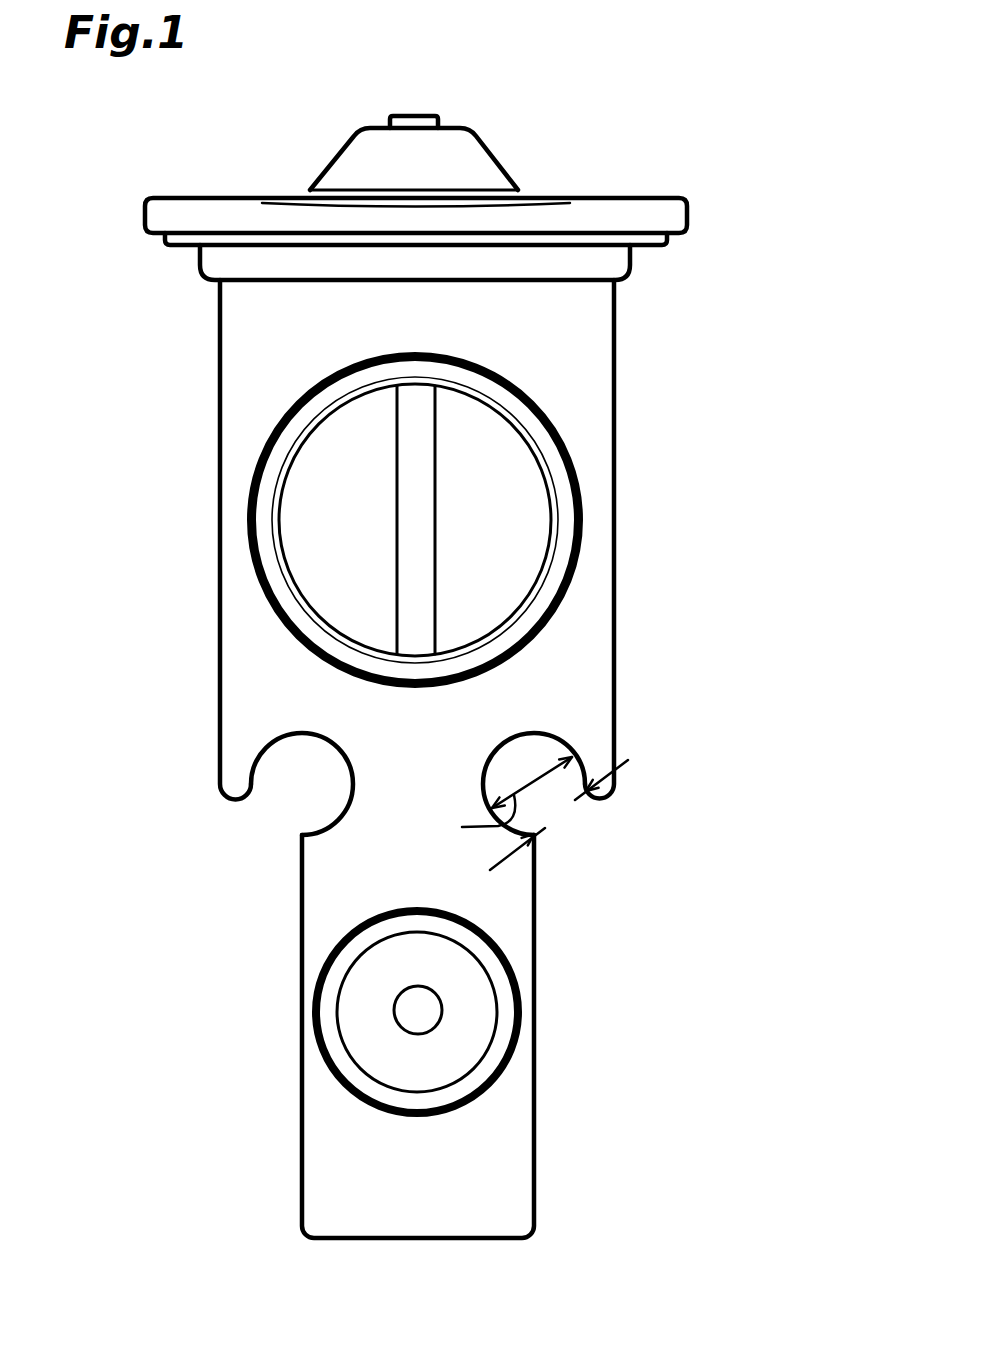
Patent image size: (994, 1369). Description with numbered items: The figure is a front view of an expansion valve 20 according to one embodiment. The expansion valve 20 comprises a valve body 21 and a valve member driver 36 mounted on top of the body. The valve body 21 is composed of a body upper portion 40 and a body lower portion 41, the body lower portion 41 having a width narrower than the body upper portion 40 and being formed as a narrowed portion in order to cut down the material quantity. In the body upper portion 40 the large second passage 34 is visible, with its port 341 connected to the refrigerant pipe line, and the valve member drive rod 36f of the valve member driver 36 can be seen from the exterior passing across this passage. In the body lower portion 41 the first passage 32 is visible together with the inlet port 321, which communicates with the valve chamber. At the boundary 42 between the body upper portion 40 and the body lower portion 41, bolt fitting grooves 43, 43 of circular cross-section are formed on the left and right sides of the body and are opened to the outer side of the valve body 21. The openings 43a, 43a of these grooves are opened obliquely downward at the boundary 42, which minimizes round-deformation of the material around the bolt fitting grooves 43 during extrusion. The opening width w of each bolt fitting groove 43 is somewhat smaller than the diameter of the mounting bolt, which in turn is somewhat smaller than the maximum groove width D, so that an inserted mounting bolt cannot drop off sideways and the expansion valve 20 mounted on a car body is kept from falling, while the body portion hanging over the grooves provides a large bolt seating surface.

The expansion valve 20 is at (722, 135).
The valve body 21 is at (615, 347).
The first passage 32 is at (384, 1023).
The inlet port 321 is at (503, 1040).
The second passage 34 is at (501, 566).
The port 341 is at (290, 598).
The valve member driver 36 is at (490, 150).
The valve member drive rod 36f is at (415, 482).
The body upper portion 40 is at (598, 442).
The body lower portion 41 is at (520, 1140).
The boundary 42 is at (312, 821).
The bolt fitting groove 43 is at (322, 791).
The opening 43a is at (262, 808).